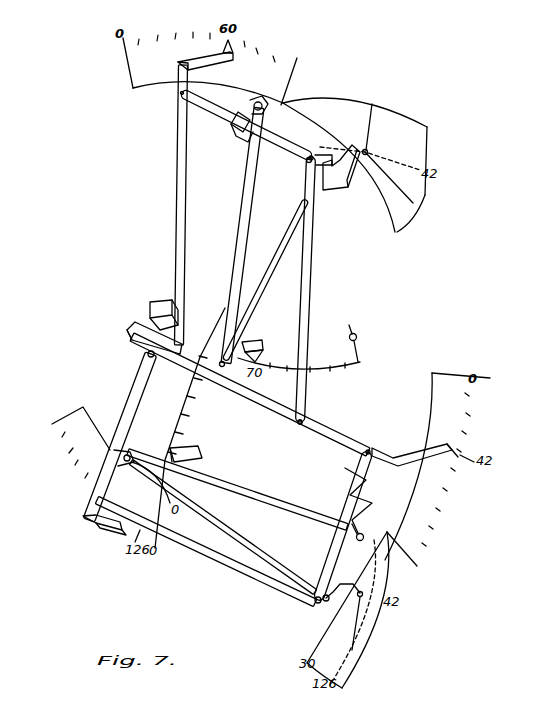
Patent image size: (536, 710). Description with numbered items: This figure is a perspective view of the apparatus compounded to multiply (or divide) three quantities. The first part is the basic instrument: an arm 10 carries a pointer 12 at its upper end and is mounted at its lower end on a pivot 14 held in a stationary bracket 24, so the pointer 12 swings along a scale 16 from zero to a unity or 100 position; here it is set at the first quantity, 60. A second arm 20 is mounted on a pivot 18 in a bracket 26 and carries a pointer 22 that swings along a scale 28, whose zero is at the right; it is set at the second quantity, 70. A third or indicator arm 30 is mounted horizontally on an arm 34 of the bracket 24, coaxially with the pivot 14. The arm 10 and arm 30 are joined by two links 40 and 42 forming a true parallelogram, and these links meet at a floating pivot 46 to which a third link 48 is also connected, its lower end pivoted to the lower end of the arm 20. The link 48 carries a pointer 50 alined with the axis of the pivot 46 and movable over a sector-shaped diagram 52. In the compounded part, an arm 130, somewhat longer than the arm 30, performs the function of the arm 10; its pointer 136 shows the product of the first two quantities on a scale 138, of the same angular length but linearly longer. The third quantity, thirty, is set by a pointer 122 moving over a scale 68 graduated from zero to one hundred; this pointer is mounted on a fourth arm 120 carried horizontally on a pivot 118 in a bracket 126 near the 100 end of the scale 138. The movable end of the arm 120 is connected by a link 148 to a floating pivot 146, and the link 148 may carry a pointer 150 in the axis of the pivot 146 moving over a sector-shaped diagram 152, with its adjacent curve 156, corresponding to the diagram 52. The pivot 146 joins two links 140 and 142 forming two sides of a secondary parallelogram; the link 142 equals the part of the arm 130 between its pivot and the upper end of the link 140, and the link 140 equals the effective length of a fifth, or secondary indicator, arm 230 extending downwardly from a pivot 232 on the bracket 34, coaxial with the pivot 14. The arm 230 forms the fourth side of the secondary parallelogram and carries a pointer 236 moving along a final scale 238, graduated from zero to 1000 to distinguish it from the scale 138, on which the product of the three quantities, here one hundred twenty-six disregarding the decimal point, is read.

The arm 10 is at (179, 178).
The pointer 12 is at (232, 55).
The pivot or shaft 14 is at (158, 354).
The scale 16 is at (148, 38).
The pivot or shaft 18 is at (252, 105).
The second arm 20 is at (243, 202).
The pointer 22 is at (262, 347).
The bracket or support 24 is at (151, 326).
The bracket or support 26 is at (232, 127).
The scale 28 is at (318, 368).
The third or indicator arm 30 is at (178, 447).
The arm of bracket 34 is at (126, 340).
The link 40 is at (223, 110).
The link 42 is at (305, 265).
The floating shaft or pivot 46 is at (322, 156).
The third link 48 is at (288, 236).
The pointer 50 is at (366, 156).
The sector-shaped diagram 52 is at (400, 120).
The 60 degree mark 60 is at (374, 119).
The scale 68 is at (182, 420).
The 70 degree mark 70 is at (397, 182).
The reference line 100 is at (322, 310).
The shaft or pivot 118 is at (362, 534).
The fourth arm 120 is at (246, 490).
The pointer 122 is at (180, 448).
The bracket or support 126 is at (353, 518).
The arm 130 is at (308, 430).
The pointer 136 is at (452, 450).
The scale 138 is at (470, 408).
The link 140 is at (324, 564).
The link 142 is at (188, 556).
The floating shaft or pivot 146 is at (316, 605).
The link 148 is at (228, 532).
The pointer 150 is at (367, 604).
The sector-shaped diagram 152 is at (364, 636).
The dashed arc 156 is at (358, 660).
The fifth or secondary indicator arm 230 is at (130, 410).
The shaft or pivot 232 is at (146, 358).
The pointer 236 is at (124, 535).
The final scale 238 is at (76, 469).
The reference line 1000 is at (66, 428).